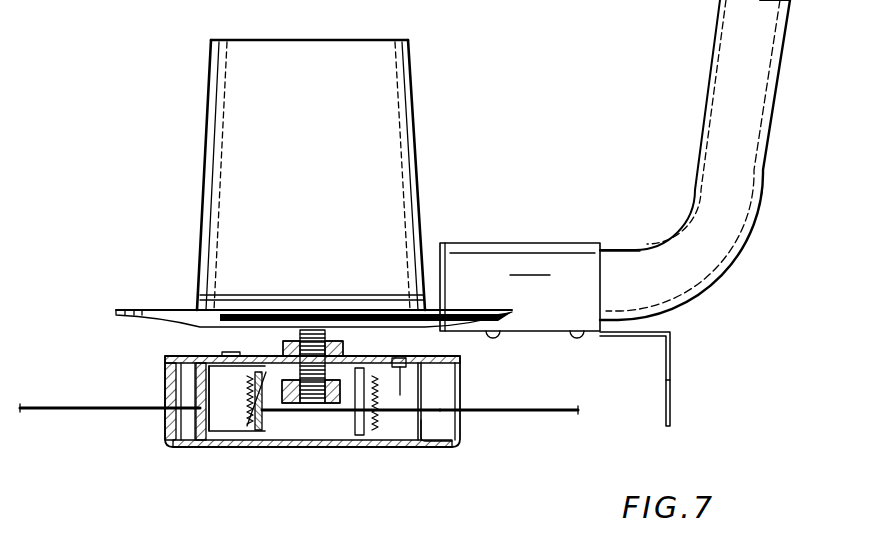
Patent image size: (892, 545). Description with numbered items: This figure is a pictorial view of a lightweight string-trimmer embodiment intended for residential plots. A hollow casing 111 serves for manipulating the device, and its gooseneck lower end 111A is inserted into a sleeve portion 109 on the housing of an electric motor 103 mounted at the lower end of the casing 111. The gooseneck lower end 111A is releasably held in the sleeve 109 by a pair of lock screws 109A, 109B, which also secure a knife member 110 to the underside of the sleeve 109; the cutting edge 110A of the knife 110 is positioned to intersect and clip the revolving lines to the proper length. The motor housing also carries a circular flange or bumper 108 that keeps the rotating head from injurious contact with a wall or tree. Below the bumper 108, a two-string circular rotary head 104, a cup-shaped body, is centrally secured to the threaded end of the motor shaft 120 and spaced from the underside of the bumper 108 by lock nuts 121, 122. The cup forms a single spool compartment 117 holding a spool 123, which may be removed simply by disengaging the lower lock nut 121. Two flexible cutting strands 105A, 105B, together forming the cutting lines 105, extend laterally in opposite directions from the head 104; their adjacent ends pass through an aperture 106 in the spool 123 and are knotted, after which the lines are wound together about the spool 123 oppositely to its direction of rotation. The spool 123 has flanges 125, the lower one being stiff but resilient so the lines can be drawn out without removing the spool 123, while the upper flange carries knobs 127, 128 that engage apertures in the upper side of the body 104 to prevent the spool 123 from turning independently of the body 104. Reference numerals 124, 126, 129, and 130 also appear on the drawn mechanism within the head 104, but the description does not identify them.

The electric motor 103 is at (413, 72).
The rotary head 104 is at (165, 378).
The cutting lines 105 is at (232, 440).
The flexible cutting strand 105A is at (85, 413).
The flexible cutting strand 105B is at (562, 432).
The aperture 106 is at (275, 422).
The bumper 108 is at (140, 310).
The sleeve portion 109 is at (530, 243).
The lock screw 109A is at (500, 343).
The lock screw 109B is at (583, 343).
The knife member 110 is at (672, 349).
The cutting edge 110A is at (677, 395).
The hollow casing 111 is at (780, 72).
The gooseneck lower end 111A is at (630, 248).
The spool compartment 117 is at (293, 455).
The motor shaft 120 is at (312, 447).
The lower lock nut 121 is at (344, 425).
The lock nut 122 is at (344, 356).
The spool 123 is at (386, 441).
The plate 124 is at (403, 374).
The spool flange 125 is at (412, 442).
The opening 126 is at (256, 356).
The knob 127 is at (398, 356).
The knob 128 is at (228, 354).
The lever 129 is at (455, 395).
The spacer 130 is at (359, 447).